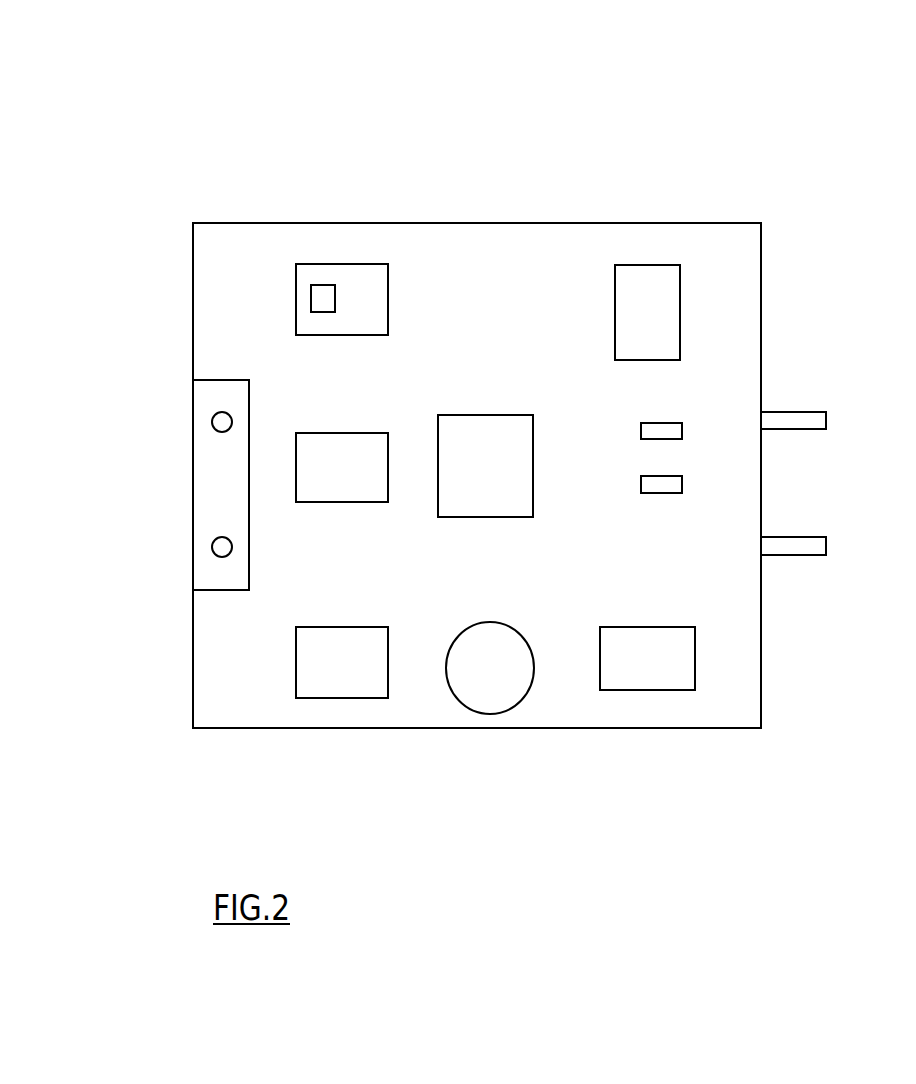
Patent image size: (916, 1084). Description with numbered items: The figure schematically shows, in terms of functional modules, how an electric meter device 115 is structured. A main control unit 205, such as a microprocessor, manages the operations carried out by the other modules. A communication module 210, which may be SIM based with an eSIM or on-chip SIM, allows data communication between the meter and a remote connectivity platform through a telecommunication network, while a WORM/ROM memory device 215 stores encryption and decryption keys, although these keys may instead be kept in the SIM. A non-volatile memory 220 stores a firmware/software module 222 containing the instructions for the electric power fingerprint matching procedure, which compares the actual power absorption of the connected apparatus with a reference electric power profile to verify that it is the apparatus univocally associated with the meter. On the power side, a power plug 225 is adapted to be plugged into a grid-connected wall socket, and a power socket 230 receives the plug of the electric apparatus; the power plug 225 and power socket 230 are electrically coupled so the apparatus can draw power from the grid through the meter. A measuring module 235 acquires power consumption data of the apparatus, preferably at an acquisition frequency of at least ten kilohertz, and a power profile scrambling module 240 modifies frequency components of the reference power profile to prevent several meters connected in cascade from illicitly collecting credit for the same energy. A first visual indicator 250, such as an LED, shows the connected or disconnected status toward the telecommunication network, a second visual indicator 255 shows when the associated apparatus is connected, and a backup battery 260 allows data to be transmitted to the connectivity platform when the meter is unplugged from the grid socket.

The electric meter device 115 is at (212, 136).
The main control unit 205 is at (492, 517).
The communication module 210 is at (347, 502).
The WORM/ROM memory device 215 is at (615, 280).
The non-volatile memory 220 is at (388, 323).
The firmware/software module 222 is at (311, 303).
The power plug 225 is at (848, 410).
The power socket 230 is at (194, 410).
The measuring module 235 is at (650, 690).
The power profile scrambling module 240 is at (296, 663).
The first visual indicator 250 is at (641, 439).
The second visual indicator 255 is at (667, 493).
The backup battery 260 is at (497, 715).